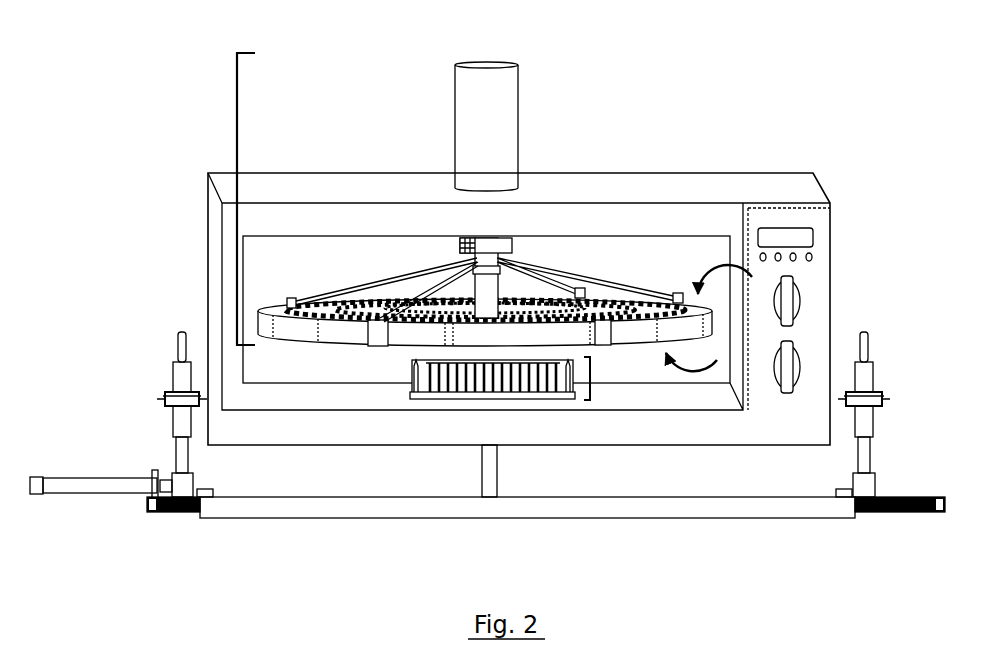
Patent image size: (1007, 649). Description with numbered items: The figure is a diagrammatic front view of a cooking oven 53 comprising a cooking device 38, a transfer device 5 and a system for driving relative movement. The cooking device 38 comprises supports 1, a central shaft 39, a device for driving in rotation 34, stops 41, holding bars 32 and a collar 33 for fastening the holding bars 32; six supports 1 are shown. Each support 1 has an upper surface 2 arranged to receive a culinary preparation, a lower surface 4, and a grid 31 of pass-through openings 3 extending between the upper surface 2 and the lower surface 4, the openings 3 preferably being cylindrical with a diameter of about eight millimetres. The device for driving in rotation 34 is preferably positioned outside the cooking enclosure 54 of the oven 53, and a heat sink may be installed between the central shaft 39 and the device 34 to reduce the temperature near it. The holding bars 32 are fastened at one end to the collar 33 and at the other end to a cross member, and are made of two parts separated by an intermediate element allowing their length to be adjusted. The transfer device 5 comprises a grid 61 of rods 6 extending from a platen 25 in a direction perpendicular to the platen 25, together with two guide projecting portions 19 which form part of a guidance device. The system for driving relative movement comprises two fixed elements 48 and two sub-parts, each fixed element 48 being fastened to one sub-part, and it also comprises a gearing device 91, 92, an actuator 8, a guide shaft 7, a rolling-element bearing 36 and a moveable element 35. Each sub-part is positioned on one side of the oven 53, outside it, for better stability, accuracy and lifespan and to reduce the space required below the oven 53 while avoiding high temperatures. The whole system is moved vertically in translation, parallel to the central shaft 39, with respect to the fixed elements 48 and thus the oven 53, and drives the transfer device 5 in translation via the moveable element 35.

The support 1 is at (337, 337).
The upper surface 2 is at (731, 285).
The pass-through openings 3 is at (485, 262).
The grid of pass-through openings 31 is at (482, 306).
The holding bars 32 is at (568, 280).
The collar for fastening the holding bars 33 is at (496, 239).
The device for driving in rotation 34 is at (488, 80).
The moveable element 35 is at (488, 490).
The rolling-element bearing 36 is at (214, 489).
The cooking device 38 is at (226, 200).
The central shaft 39 is at (496, 265).
The lower surface 4 is at (694, 354).
The stops 41 is at (378, 332).
The fixed elements 48 is at (158, 386).
The transfer device 5 is at (599, 378).
The oven 53 is at (772, 190).
The cooking enclosure 54 is at (688, 252).
The rods 6 is at (458, 374).
The grid of rods 61 is at (417, 384).
The guide shaft 7 is at (180, 369).
The actuator 8 is at (101, 475).
The guide projecting portions 19 is at (426, 390).
The platen 25 is at (402, 397).
The gearing device 91 is at (546, 545).
The gearing device 92 is at (189, 522).